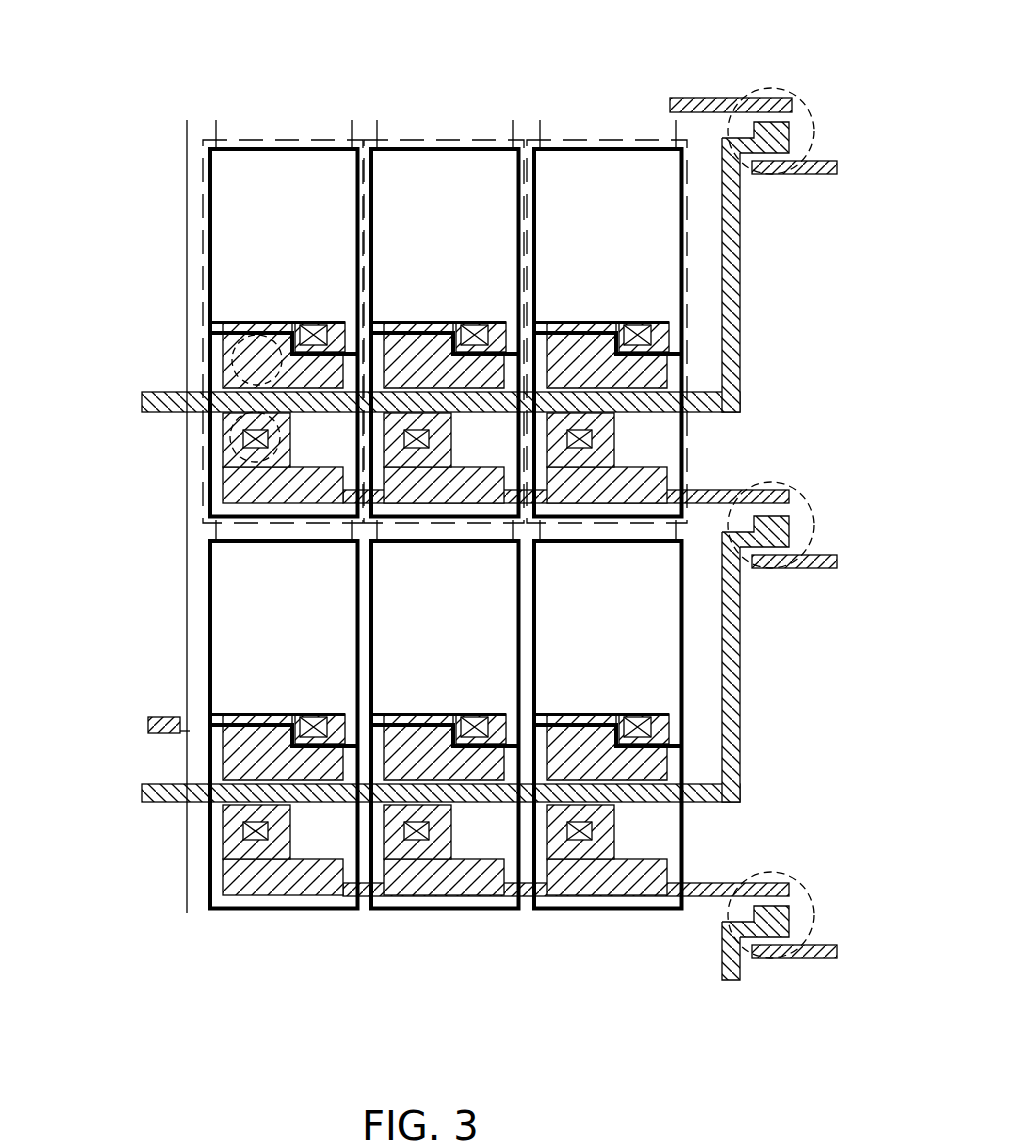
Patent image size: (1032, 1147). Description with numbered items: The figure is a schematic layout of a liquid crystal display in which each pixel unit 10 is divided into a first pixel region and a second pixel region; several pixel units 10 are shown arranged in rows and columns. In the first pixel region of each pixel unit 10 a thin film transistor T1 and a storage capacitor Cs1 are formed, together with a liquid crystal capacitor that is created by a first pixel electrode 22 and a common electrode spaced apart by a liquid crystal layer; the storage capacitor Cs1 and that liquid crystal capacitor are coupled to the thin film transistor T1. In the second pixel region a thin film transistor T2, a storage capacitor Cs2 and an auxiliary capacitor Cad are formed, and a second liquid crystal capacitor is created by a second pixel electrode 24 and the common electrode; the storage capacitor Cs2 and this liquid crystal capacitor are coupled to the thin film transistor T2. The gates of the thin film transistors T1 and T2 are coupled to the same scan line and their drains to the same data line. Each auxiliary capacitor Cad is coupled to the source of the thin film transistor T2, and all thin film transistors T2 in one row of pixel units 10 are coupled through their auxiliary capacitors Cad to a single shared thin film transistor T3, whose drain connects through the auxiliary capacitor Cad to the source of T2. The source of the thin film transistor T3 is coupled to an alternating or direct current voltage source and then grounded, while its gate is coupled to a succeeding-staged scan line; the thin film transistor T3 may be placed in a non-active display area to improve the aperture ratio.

The pixel unit 10 is at (284, 123).
The thin film transistor T1 is at (282, 322).
The thin film transistor T2 is at (279, 443).
The thin film transistor T3 is at (788, 92).
The first pixel electrode 22 is at (685, 240).
The second pixel electrode 24 is at (685, 435).
The storage capacitor Cs1 is at (220, 340).
The storage capacitor Cs2 is at (227, 433).
The auxiliary capacitor Cad is at (227, 478).